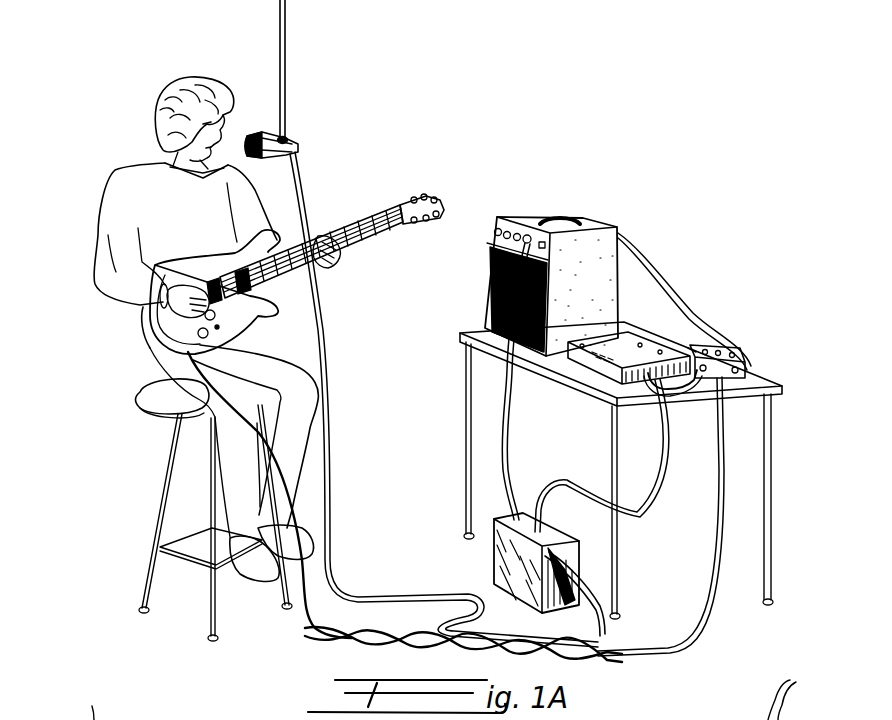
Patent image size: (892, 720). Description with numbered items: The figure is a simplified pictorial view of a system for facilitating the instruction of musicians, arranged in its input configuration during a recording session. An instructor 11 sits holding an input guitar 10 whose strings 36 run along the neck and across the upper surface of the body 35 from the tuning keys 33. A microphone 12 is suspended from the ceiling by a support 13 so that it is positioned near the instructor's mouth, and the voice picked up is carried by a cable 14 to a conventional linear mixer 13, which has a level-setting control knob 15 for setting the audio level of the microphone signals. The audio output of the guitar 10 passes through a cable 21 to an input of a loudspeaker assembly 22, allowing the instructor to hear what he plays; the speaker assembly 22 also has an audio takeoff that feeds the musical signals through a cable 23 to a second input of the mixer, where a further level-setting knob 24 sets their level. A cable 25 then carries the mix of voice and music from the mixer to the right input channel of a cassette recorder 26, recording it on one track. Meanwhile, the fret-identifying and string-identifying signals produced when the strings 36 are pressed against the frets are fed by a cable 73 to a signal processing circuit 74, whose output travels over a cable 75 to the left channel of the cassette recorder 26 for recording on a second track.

The input guitar 10 is at (286, 218).
The instructor 11 is at (113, 156).
The microphone 12 is at (289, 140).
The support / linear mixer 13 is at (286, 50).
The cable 14 is at (330, 368).
The level-setting control knob 15 is at (712, 356).
The cable 21 is at (228, 424).
The loudspeaker assembly 22 is at (588, 214).
The cable 23 is at (652, 278).
The level-setting knob 24 is at (740, 392).
The cable 25 is at (698, 392).
The cassette recorder 26 is at (584, 356).
The tuning keys 33 is at (780, 690).
The body 35 is at (93, 706).
The strings 36 is at (372, 240).
The cable 73 is at (254, 318).
The signal processing circuit 74 is at (494, 548).
The cable 75 is at (638, 516).